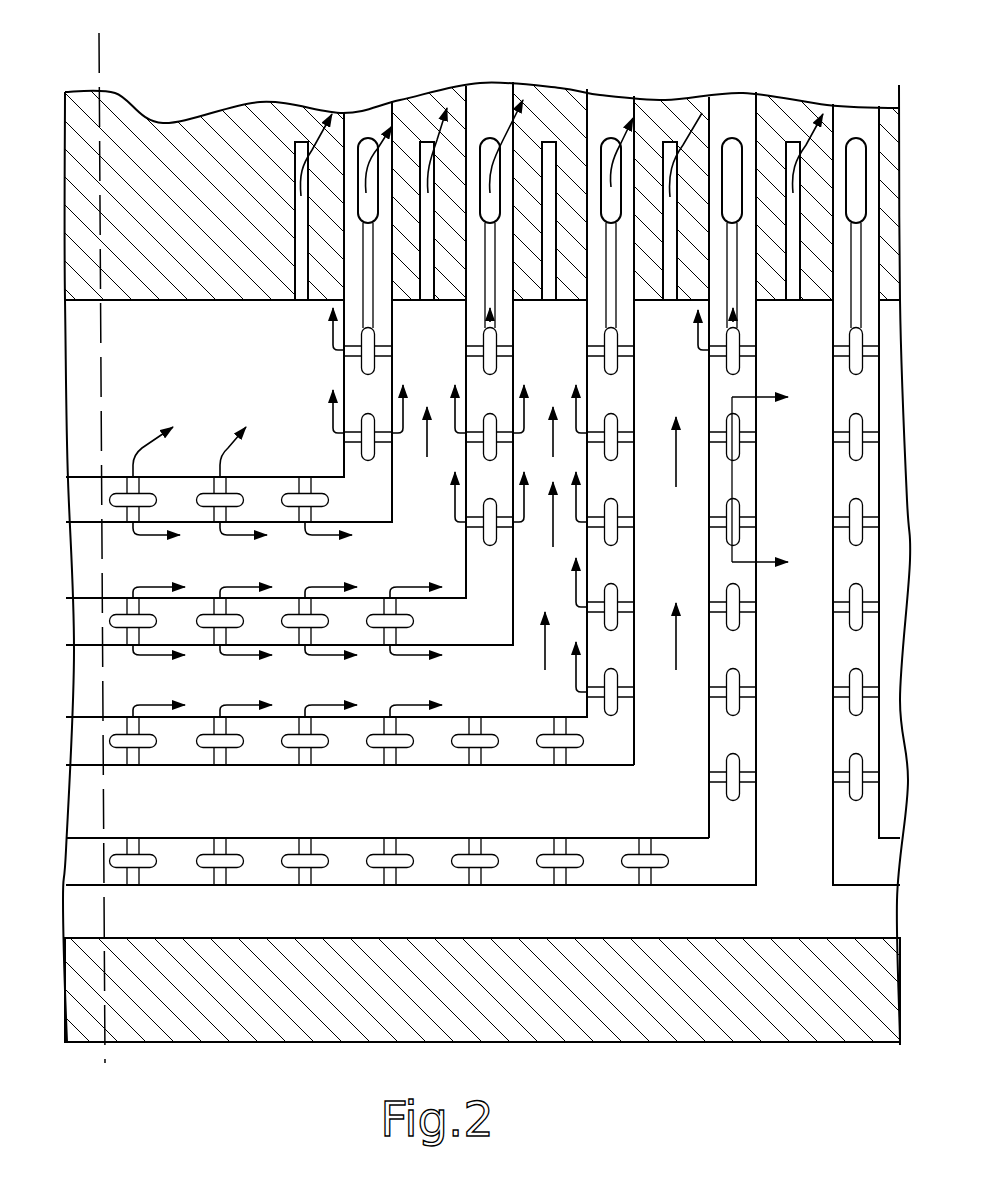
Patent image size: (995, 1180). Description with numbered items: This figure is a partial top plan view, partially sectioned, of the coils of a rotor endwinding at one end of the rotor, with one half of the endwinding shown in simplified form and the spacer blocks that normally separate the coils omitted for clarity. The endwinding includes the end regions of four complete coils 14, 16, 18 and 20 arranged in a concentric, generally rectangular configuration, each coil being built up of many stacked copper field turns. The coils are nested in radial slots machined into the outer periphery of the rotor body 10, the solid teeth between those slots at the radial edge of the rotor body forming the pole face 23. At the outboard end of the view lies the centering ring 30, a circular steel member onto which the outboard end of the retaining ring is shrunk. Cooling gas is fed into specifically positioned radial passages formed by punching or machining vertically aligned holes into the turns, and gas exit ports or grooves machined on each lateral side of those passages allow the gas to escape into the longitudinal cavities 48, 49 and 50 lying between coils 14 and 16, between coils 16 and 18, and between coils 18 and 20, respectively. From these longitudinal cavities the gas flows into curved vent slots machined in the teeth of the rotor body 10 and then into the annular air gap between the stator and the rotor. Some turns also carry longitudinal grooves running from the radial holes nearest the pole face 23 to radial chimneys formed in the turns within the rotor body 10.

The rotor body 10 is at (176, 140).
The coil 14 is at (327, 474).
The coil 16 is at (462, 553).
The coil 18 is at (638, 670).
The coil 20 is at (708, 828).
The pole face 23 is at (161, 302).
The centering ring 30 is at (423, 947).
The longitudinal cavity 48 is at (377, 559).
The longitudinal cavity 49 is at (534, 586).
The longitudinal cavity 50 is at (672, 517).